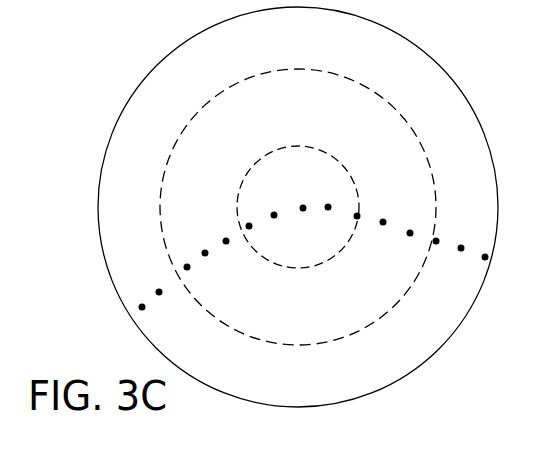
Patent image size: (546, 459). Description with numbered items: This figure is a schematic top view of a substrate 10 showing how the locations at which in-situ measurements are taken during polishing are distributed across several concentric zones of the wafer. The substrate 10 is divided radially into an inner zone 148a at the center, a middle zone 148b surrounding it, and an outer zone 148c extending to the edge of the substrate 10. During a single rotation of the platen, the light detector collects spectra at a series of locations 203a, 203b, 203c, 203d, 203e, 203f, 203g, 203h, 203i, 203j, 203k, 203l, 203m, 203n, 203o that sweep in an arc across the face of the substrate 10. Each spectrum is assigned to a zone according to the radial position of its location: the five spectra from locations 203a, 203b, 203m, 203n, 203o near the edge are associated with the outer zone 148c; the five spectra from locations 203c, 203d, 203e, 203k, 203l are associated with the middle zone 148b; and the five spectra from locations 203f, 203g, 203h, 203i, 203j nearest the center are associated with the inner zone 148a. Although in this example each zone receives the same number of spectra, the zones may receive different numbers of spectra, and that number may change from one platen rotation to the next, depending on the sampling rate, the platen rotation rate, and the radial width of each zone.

The substrate 10 is at (283, 207).
The inner zone 148a is at (267, 155).
The middle zone 148b is at (198, 112).
The outer zone 148c is at (123, 108).
The location 203a is at (142, 307).
The location 203b is at (159, 292).
The location 203c is at (187, 267).
The location 203d is at (205, 253).
The location 203e is at (226, 241).
The location 203f is at (249, 226).
The location 203g is at (274, 215).
The location 203h is at (303, 208).
The location 203i is at (328, 207).
The location 203j is at (357, 216).
The location 203k is at (383, 222).
The location 203l is at (410, 233).
The location 203m is at (436, 241).
The location 203n is at (461, 248).
The location 203o is at (485, 257).